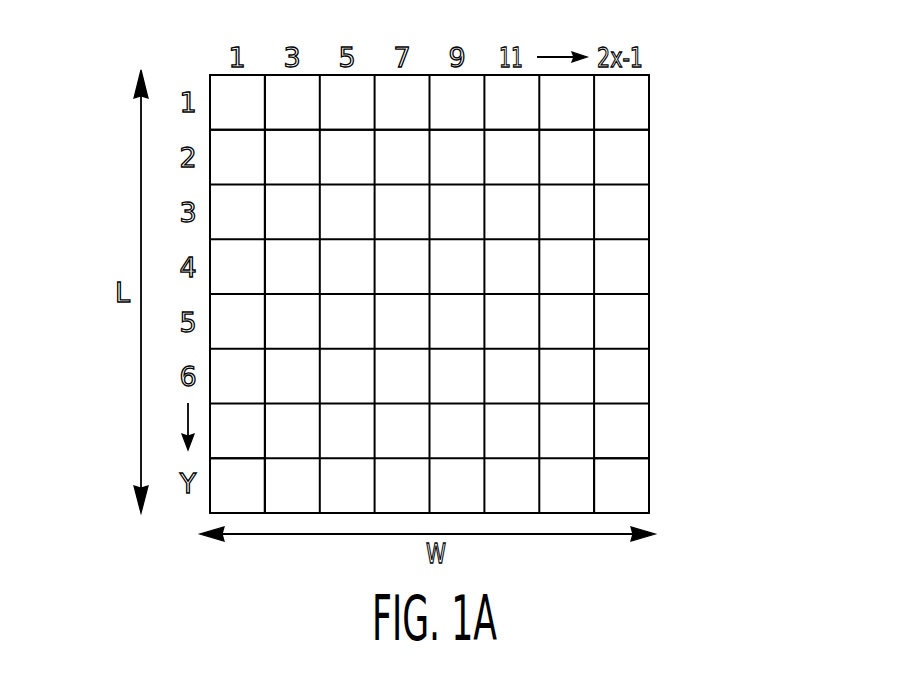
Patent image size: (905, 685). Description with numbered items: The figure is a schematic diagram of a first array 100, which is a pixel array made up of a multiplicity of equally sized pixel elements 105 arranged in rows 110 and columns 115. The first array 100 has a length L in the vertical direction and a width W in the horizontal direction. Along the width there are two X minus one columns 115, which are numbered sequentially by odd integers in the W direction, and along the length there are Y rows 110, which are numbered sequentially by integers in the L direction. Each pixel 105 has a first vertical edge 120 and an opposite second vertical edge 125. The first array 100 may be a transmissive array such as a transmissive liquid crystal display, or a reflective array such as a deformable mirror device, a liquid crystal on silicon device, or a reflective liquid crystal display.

The first array 100 is at (712, 102).
The pixel element 105 is at (630, 497).
The row 110 is at (107, 75).
The column 115 is at (267, 47).
The first vertical edge 120 is at (210, 513).
The second vertical edge 125 is at (265, 483).